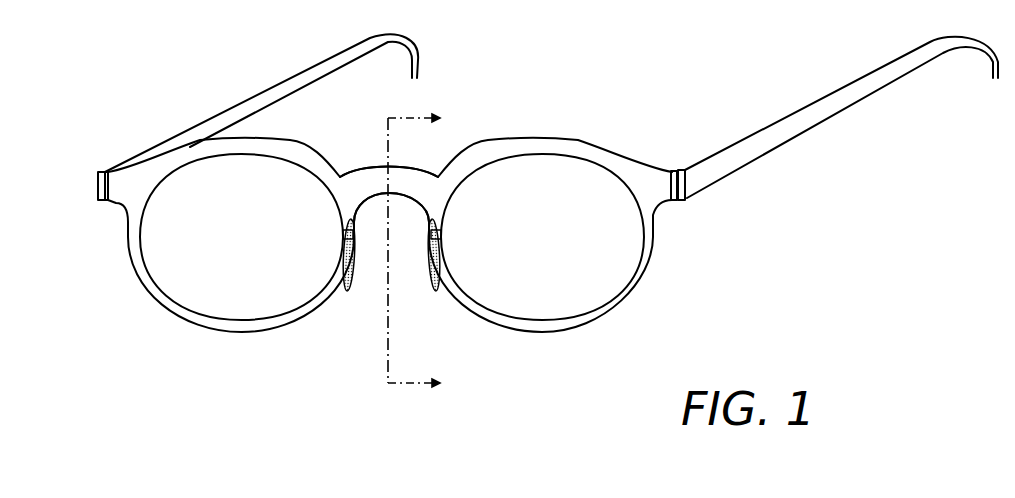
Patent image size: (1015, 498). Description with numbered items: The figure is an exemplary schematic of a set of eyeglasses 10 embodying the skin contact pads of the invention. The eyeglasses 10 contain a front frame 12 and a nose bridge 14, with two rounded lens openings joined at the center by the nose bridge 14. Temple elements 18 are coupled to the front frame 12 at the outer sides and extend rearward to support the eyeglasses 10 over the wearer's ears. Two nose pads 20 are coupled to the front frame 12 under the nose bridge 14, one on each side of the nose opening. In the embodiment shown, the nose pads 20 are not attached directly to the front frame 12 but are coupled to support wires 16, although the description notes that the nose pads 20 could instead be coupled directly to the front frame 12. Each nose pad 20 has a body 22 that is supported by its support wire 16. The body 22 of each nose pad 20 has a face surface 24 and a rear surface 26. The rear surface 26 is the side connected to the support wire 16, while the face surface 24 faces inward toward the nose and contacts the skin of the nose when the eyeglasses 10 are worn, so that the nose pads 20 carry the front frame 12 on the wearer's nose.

The eyeglasses 10 is at (520, 77).
The front frame 12 is at (622, 163).
The nose bridge 14 is at (372, 176).
The support wire 16 is at (343, 238).
The temple element 18 is at (187, 132).
The nose pad 20 is at (352, 283).
The body 22 is at (437, 233).
The face surface 24 is at (428, 258).
The rear surface 26 is at (436, 269).